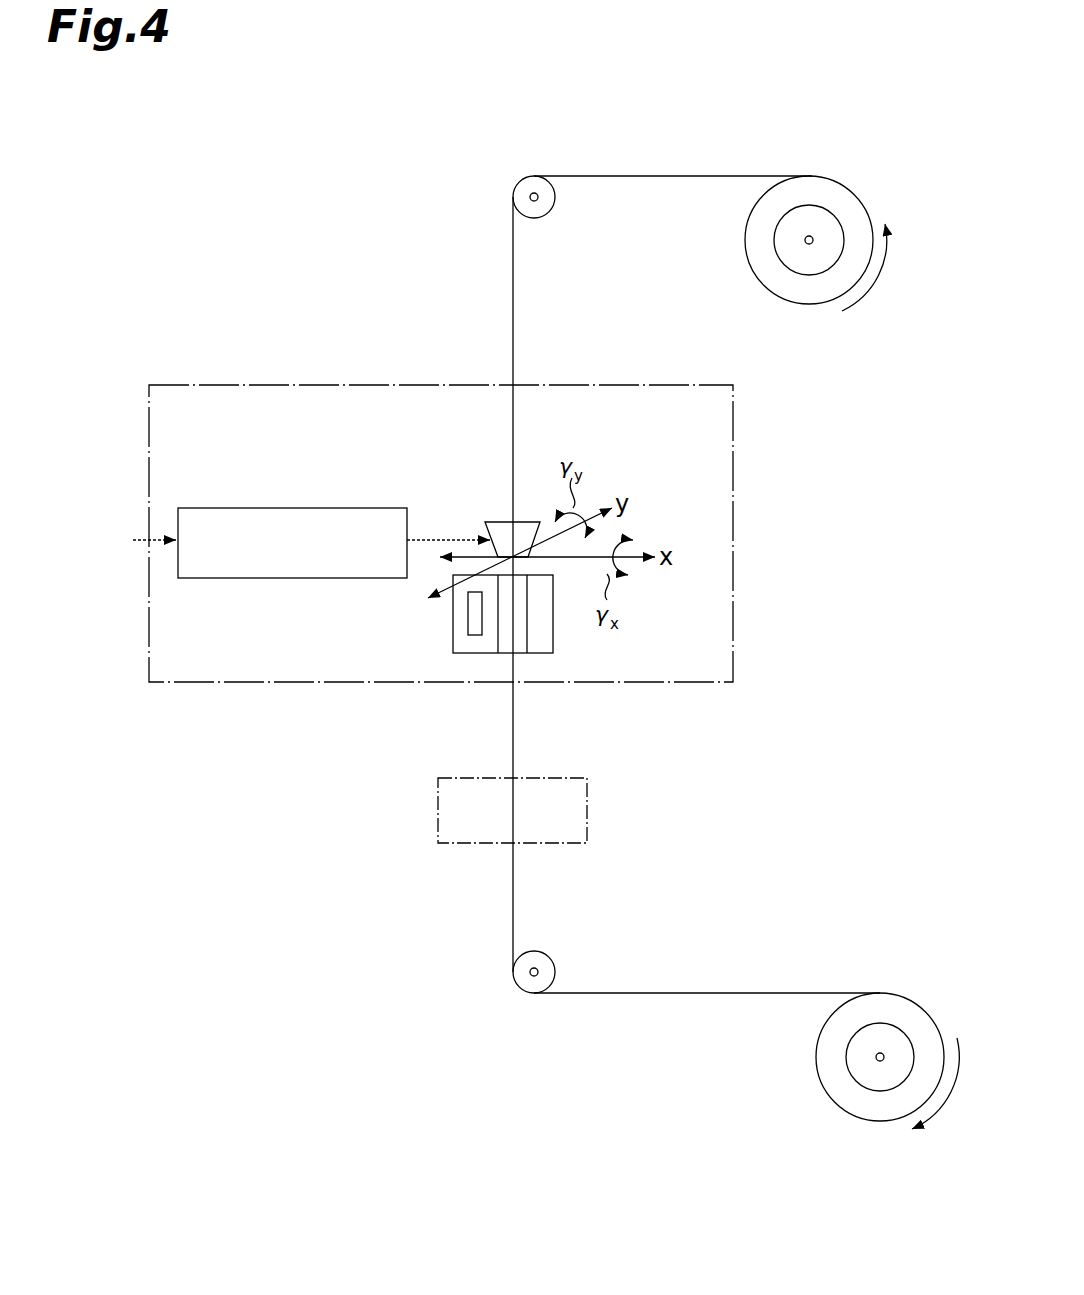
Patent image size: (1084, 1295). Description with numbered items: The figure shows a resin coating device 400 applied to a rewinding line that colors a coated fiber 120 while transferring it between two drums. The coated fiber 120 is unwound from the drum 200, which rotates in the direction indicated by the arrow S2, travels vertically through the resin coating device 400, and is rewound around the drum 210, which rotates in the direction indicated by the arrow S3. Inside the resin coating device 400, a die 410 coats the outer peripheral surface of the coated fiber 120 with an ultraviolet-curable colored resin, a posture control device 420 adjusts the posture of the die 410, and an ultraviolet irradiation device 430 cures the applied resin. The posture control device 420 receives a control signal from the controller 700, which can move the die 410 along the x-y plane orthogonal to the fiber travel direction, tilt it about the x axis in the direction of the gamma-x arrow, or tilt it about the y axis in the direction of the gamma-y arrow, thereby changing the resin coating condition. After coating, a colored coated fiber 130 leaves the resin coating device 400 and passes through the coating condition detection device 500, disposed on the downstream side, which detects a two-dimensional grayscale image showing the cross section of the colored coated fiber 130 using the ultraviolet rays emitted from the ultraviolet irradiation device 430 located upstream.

The coated fiber 120 is at (516, 300).
The colored coated fiber 130 is at (516, 720).
The drum 200 is at (828, 195).
The drum 210 is at (903, 1015).
The resin coating device 400 is at (733, 440).
The die 410 is at (497, 520).
The posture control device 420 is at (320, 507).
The ultraviolet irradiation device 430 is at (452, 647).
The coating condition detection device 500 is at (587, 815).
The controller 700 is at (113, 539).
The arrow indicating rotation direction of drum S2 is at (885, 267).
The arrow indicating rotation direction of drum S3 is at (942, 1110).